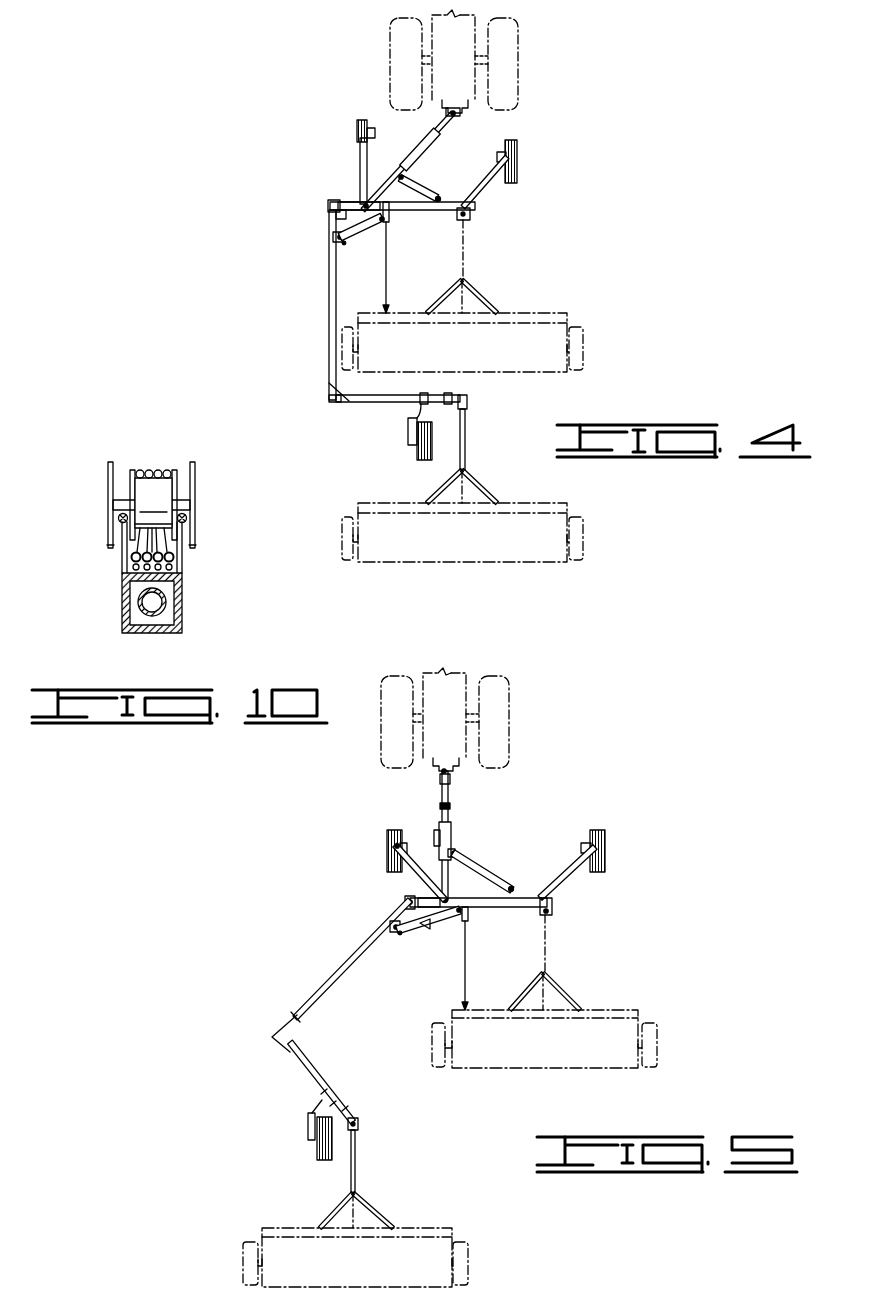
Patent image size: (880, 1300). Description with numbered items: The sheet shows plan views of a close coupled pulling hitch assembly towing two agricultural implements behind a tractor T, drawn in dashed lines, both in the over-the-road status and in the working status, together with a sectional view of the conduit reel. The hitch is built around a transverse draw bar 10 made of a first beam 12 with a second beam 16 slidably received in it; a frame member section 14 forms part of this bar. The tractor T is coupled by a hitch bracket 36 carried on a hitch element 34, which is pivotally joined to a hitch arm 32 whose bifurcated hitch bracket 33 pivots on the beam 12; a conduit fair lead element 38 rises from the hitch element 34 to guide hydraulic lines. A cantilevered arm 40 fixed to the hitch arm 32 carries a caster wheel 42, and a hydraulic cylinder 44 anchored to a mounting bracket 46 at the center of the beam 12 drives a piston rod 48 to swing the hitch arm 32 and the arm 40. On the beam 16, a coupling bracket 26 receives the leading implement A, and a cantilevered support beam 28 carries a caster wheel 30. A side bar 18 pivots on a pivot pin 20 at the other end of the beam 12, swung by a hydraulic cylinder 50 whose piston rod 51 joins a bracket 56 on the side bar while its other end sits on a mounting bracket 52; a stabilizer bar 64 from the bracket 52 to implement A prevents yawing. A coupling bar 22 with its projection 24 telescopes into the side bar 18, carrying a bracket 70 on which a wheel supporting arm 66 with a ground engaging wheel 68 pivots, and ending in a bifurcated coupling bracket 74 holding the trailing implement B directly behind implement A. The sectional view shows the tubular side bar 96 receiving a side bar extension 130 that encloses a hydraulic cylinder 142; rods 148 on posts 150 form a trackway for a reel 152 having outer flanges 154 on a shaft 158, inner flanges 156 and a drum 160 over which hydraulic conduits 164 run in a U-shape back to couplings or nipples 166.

In FIG. 4, the agricultural tractor T is at (460, 60).
In FIG. 5, the agricultural tractor T is at (453, 715).
In FIG. 4, the leading agricultural implement A is at (522, 345).
In FIG. 5, the leading agricultural implement A is at (612, 1035).
In FIG. 4, the trailing agricultural implement B is at (537, 545).
In FIG. 5, the trailing agricultural implement B is at (425, 1250).
In FIG. 4, the transverse draw bar 10 is at (376, 287).
In FIG. 5, the transverse draw bar 10 is at (401, 998).
In FIG. 4, the first beam 12 is at (412, 211).
In FIG. 5, the first beam 12 is at (485, 907).
In FIG. 4, the frame member section 14 is at (349, 200).
In FIG. 5, the frame member section 14 is at (420, 897).
In FIG. 4, the second beam 16 is at (466, 226).
In FIG. 5, the second beam 16 is at (529, 904).
In FIG. 4, the side bar 18 is at (330, 300).
In FIG. 5, the side bar 18 is at (341, 970).
In FIG. 4, the pivot pin 20 is at (328, 205).
In FIG. 5, the pivot pin 20 is at (405, 902).
In FIG. 4, the coupling bar 22 is at (380, 397).
In FIG. 5, the coupling bar 22 is at (300, 1060).
In FIG. 4, the projection 24 is at (330, 376).
In FIG. 5, the projection 24 is at (292, 1018).
In FIG. 4, the coupling bracket 26 is at (470, 216).
In FIG. 5, the coupling bracket 26 is at (552, 911).
In FIG. 4, the first cantilevered support beam 28 is at (480, 192).
In FIG. 5, the first cantilevered support beam 28 is at (565, 887).
In FIG. 4, the caster wheel 30 is at (515, 147).
In FIG. 5, the caster wheel 30 is at (604, 840).
In FIG. 4, the hitch arm 32 is at (366, 202).
In FIG. 5, the hitch arm 32 is at (449, 880).
In FIG. 4, the bifurcated hitch bracket 33 is at (338, 215).
In FIG. 5, the bifurcated hitch bracket 33 is at (430, 922).
In FIG. 4, the hitch element 34 is at (412, 150).
In FIG. 5, the hitch element 34 is at (451, 823).
In FIG. 4, the hitch bracket 36 is at (447, 120).
In FIG. 5, the hitch bracket 36 is at (449, 790).
In FIG. 4, the hydraulic fluid conduit fair lead element 38 is at (430, 140).
In FIG. 5, the hydraulic fluid conduit fair lead element 38 is at (449, 808).
In FIG. 4, the cantilevered arm 40 is at (357, 165).
In FIG. 5, the cantilevered arm 40 is at (418, 862).
In FIG. 4, the caster wheel 42 is at (358, 121).
In FIG. 5, the caster wheel 42 is at (394, 834).
In FIG. 4, the hydraulic cylinder 44 is at (418, 187).
In FIG. 5, the hydraulic cylinder 44 is at (480, 871).
In FIG. 4, the mounting bracket 46 is at (442, 201).
In FIG. 5, the mounting bracket 46 is at (510, 887).
In FIG. 5, the piston rod 48 is at (460, 853).
In FIG. 4, the hydraulic cylinder 50 is at (352, 237).
In FIG. 5, the hydraulic cylinder 50 is at (436, 920).
In FIG. 4, the piston rod 51 is at (346, 244).
In FIG. 5, the piston rod 51 is at (400, 936).
In FIG. 4, the mounting bracket 52 is at (388, 220).
In FIG. 5, the mounting bracket 52 is at (468, 914).
In FIG. 4, the bracket 56 is at (336, 240).
In FIG. 5, the bracket 56 is at (392, 929).
In FIG. 4, the stabilizer bar 64 is at (390, 281).
In FIG. 5, the stabilizer bar 64 is at (468, 980).
In FIG. 4, the cantilevered wheel supporting arm 66 is at (408, 414).
In FIG. 5, the cantilevered wheel supporting arm 66 is at (312, 1112).
In FIG. 4, the ground engaging wheel 68 is at (413, 455).
In FIG. 5, the ground engaging wheel 68 is at (318, 1157).
In FIG. 4, the bracket 70 is at (425, 395).
In FIG. 5, the bracket 70 is at (330, 1100).
In FIG. 4, the bifurcated coupling bracket 74 is at (468, 403).
In FIG. 5, the bifurcated coupling bracket 74 is at (360, 1123).
In FIG. 10, the side bar 96 is at (152, 633).
In FIG. 10, the side bar extension 130 is at (182, 616).
In FIG. 10, the hydraulic cylinder 142 is at (166, 602).
In FIG. 10, the rods 148 is at (118, 518).
In FIG. 10, the posts 150 is at (131, 556).
In FIG. 10, the reel 152 is at (203, 480).
In FIG. 10, the outer flanges 154 is at (108, 466).
In FIG. 10, the inner flanges 156 is at (131, 470).
In FIG. 10, the shaft 158 is at (190, 505).
In FIG. 10, the drum 160 is at (142, 501).
In FIG. 10, the hydraulic conduits 164 is at (151, 470).
In FIG. 10, the couplings or nipples 166 is at (131, 567).